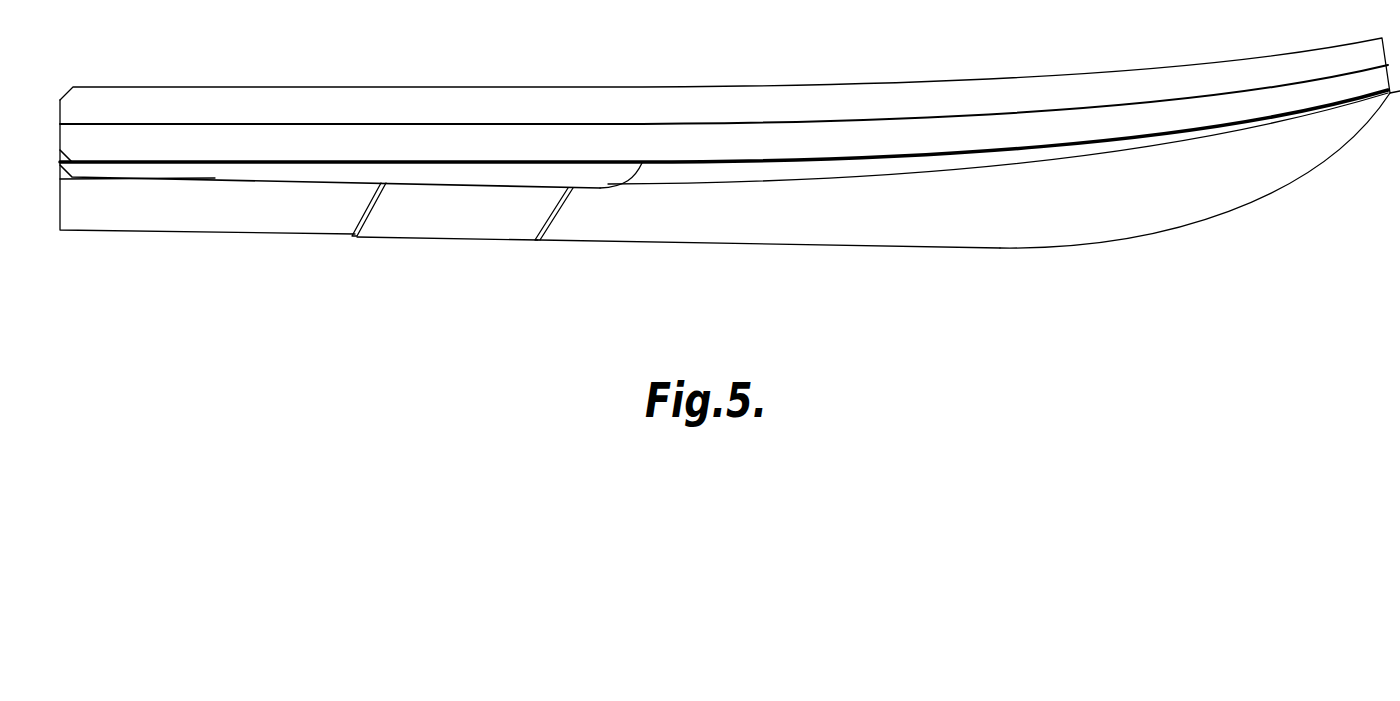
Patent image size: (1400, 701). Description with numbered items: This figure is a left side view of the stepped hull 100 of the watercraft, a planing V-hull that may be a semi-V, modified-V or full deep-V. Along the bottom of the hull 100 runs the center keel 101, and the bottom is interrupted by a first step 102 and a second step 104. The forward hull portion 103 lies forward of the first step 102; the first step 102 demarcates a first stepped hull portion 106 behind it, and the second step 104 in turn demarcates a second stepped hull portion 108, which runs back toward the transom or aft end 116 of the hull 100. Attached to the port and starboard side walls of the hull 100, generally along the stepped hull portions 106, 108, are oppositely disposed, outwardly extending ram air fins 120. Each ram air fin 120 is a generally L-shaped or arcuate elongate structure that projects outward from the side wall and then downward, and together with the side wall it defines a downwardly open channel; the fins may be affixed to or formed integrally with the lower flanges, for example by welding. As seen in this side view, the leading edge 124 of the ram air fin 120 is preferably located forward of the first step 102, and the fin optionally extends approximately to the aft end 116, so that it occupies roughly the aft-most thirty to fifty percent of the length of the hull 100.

The stepped hull 100 is at (1032, 54).
The center keel 101 is at (1003, 248).
The first step 102 is at (535, 240).
The forward hull portion 103 is at (787, 228).
The second step 104 is at (352, 235).
The first stepped hull portion 106 is at (472, 223).
The second stepped hull portion 108 is at (224, 218).
The aft end 116 is at (60, 127).
The ram air fin 120 is at (415, 172).
The leading edge 124 is at (642, 165).